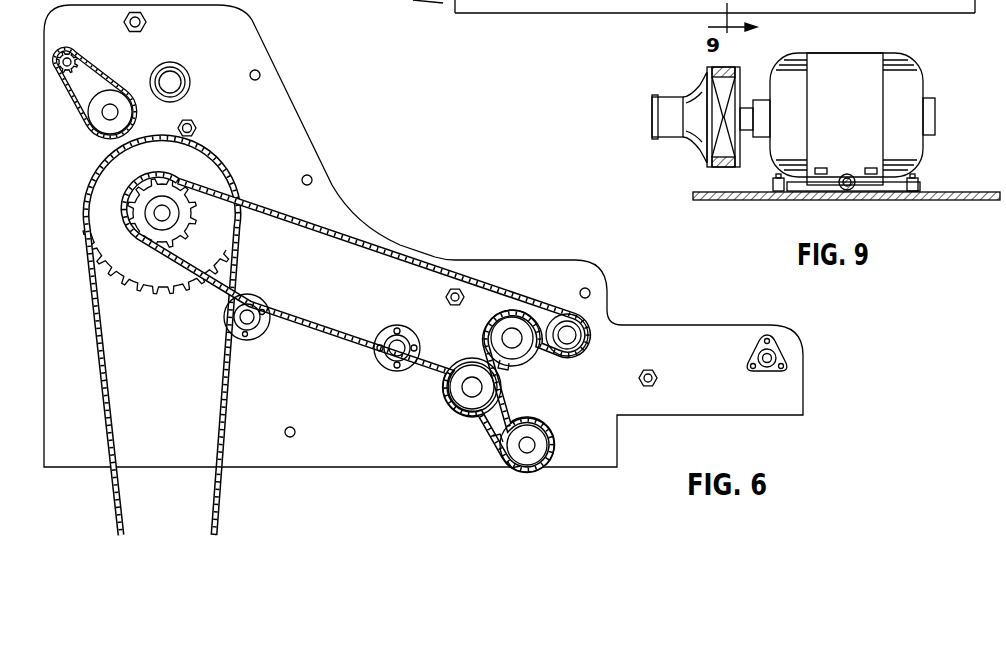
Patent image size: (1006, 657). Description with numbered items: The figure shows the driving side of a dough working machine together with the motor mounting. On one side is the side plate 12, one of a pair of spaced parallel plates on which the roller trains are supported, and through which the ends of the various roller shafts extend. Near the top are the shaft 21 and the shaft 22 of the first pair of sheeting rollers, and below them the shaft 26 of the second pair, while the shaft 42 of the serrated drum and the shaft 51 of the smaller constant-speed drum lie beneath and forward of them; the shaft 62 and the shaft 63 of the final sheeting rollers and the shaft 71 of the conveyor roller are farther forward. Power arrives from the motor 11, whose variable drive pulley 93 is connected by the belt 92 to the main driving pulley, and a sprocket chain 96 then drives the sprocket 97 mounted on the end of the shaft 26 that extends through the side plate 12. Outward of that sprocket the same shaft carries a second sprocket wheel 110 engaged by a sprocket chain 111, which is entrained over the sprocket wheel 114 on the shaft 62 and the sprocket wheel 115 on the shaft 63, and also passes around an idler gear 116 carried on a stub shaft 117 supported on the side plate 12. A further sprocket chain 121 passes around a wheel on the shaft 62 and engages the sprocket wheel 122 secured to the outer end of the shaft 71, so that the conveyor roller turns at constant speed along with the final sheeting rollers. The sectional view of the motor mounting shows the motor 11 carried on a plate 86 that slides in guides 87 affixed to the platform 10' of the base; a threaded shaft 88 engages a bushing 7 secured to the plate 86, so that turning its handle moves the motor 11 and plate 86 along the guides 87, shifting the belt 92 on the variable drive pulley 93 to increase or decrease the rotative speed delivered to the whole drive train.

In FIG. 6, the side plate 12 is at (365, 222).
In FIG. 6, the shaft 21 is at (108, 114).
In FIG. 6, the shaft 22 is at (171, 83).
In FIG. 6, the shaft 26 is at (160, 216).
In FIG. 6, the shaft 42 is at (247, 322).
In FIG. 6, the shaft 51 is at (393, 345).
In FIG. 6, the shaft 62 is at (472, 390).
In FIG. 6, the shaft 63 is at (513, 340).
In FIG. 6, the shaft 71 is at (527, 448).
In FIG. 6, the sprocket chain 96 is at (225, 385).
In FIG. 6, the sprocket 97 is at (193, 281).
In FIG. 6, the second sprocket wheel 110 is at (145, 243).
In FIG. 6, the sprocket chain 111 is at (352, 353).
In FIG. 6, the sprocket wheel 114 is at (470, 360).
In FIG. 6, the sprocket wheel 115 is at (507, 365).
In FIG. 6, the idler gear 116 is at (580, 337).
In FIG. 6, the stub shaft 117 is at (570, 350).
In FIG. 6, the sprocket chain 121 is at (497, 443).
In FIG. 6, the sprocket wheel 122 is at (517, 458).
In FIG. 9, the platform 10' is at (847, 173).
In FIG. 9, the motor 11 is at (920, 72).
In FIG. 9, the plate 86 is at (885, 191).
In FIG. 9, the guides 87 is at (773, 182).
In FIG. 9, the shaft 88 is at (853, 177).
In FIG. 9, the bushing 7 is at (843, 177).
In FIG. 9, the belt 92 is at (713, 167).
In FIG. 9, the variable drive pulley 93 is at (676, 138).